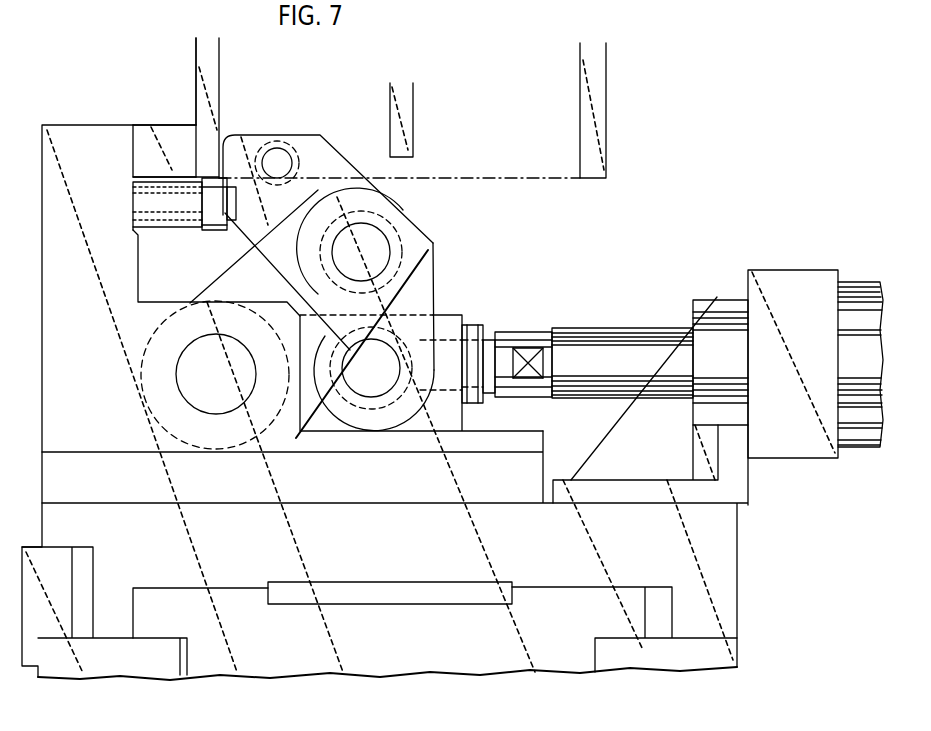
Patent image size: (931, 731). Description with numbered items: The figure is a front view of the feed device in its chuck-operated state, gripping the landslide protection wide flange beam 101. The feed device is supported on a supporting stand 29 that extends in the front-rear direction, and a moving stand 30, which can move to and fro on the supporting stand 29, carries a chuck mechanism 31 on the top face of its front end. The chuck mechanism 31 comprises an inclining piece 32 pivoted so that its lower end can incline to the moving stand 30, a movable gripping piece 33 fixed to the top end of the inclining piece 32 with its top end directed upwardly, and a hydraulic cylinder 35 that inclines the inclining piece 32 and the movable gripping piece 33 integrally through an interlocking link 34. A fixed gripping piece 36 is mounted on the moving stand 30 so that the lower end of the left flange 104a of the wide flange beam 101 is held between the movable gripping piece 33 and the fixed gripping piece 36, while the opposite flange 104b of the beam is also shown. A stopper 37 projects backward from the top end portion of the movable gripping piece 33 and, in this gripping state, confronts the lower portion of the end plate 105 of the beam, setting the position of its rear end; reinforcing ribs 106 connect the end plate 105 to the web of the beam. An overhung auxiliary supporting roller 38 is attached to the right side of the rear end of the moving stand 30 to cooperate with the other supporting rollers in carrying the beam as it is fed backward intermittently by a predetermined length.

The supporting stand 29 is at (433, 668).
The moving stand 30 is at (740, 574).
The chuck mechanism 31 is at (435, 247).
The inclining piece 32 is at (218, 281).
The movable gripping piece 33 is at (346, 156).
The interlocking link 34 is at (423, 312).
The hydraulic cylinder 35 is at (842, 283).
The fixed gripping piece 36 is at (174, 135).
The stopper 37 is at (275, 156).
The overhung auxiliary supporting roller 38 is at (207, 203).
The landslide protection wide flange beam 101 is at (196, 70).
The left flange 104a is at (216, 80).
The guide post 104b is at (582, 98).
The end plate 105 is at (548, 152).
The reinforcing rib 106 is at (409, 112).